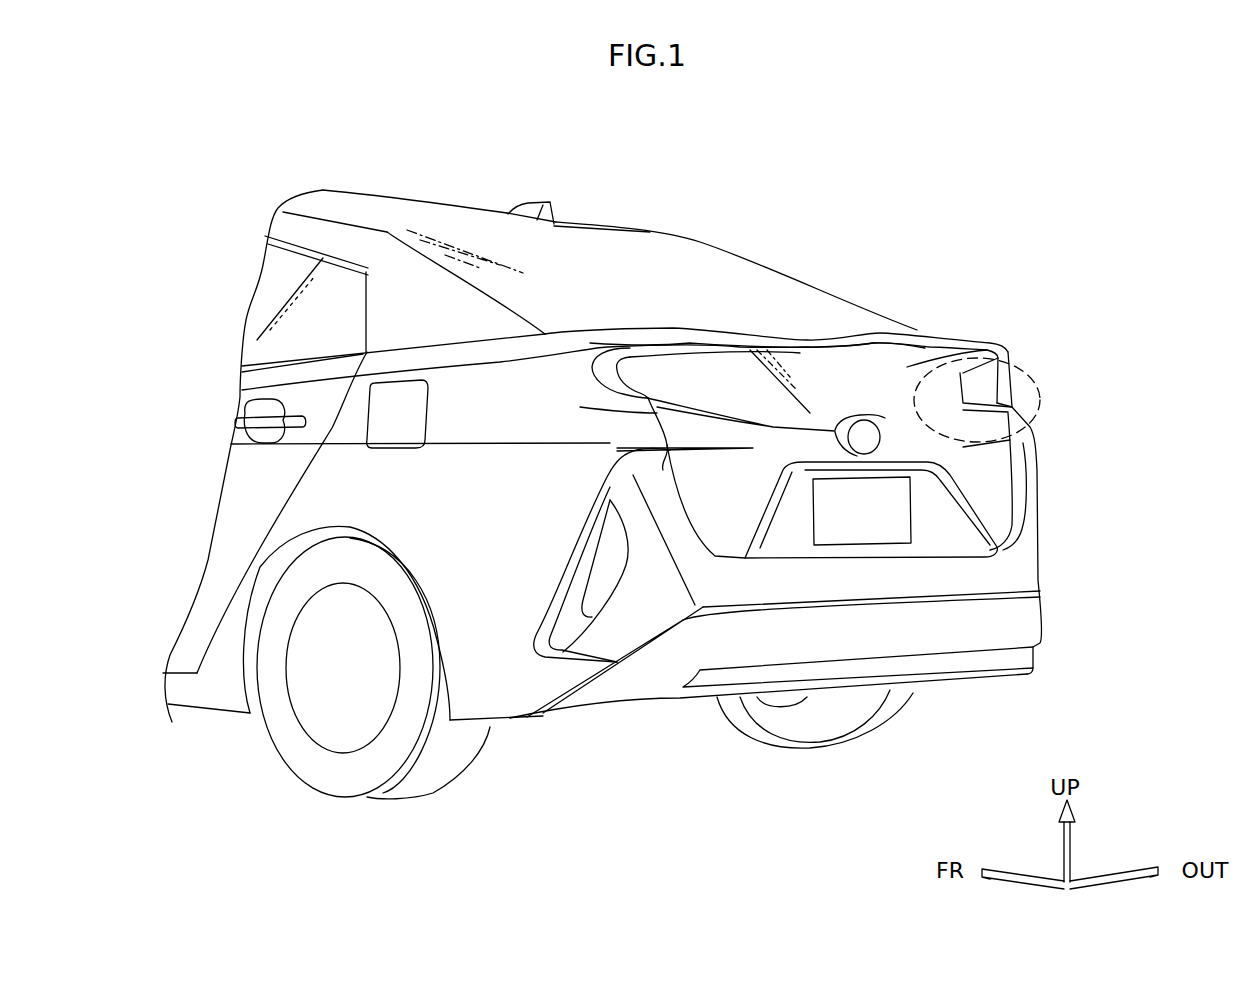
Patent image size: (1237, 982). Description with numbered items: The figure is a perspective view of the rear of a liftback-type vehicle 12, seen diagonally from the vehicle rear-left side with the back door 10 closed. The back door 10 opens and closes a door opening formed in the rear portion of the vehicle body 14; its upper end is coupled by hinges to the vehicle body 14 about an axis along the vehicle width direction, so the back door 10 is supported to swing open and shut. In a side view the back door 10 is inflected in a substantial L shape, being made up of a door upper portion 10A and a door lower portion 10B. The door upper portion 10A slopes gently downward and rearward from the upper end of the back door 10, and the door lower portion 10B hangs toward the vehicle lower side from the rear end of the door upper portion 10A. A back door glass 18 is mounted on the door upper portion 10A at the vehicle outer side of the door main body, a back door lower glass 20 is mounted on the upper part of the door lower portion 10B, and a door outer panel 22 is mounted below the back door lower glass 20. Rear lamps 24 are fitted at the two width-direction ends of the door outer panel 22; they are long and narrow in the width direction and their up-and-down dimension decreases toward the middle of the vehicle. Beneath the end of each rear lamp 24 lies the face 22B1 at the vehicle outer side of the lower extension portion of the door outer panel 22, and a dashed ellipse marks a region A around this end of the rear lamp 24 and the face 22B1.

The back door 10 is at (862, 284).
The door upper portion 10A is at (764, 283).
The door lower portion 10B is at (990, 507).
The vehicle 12 is at (500, 169).
The vehicle body 14 is at (440, 202).
The back door glass 18 is at (698, 263).
The back door lower glass 20 is at (907, 367).
The door outer panel 22 is at (937, 527).
The face at the vehicle outer side of the lower extension portion 22B1 is at (990, 427).
The rear lamps 24 is at (680, 400).
The region A is at (1040, 383).